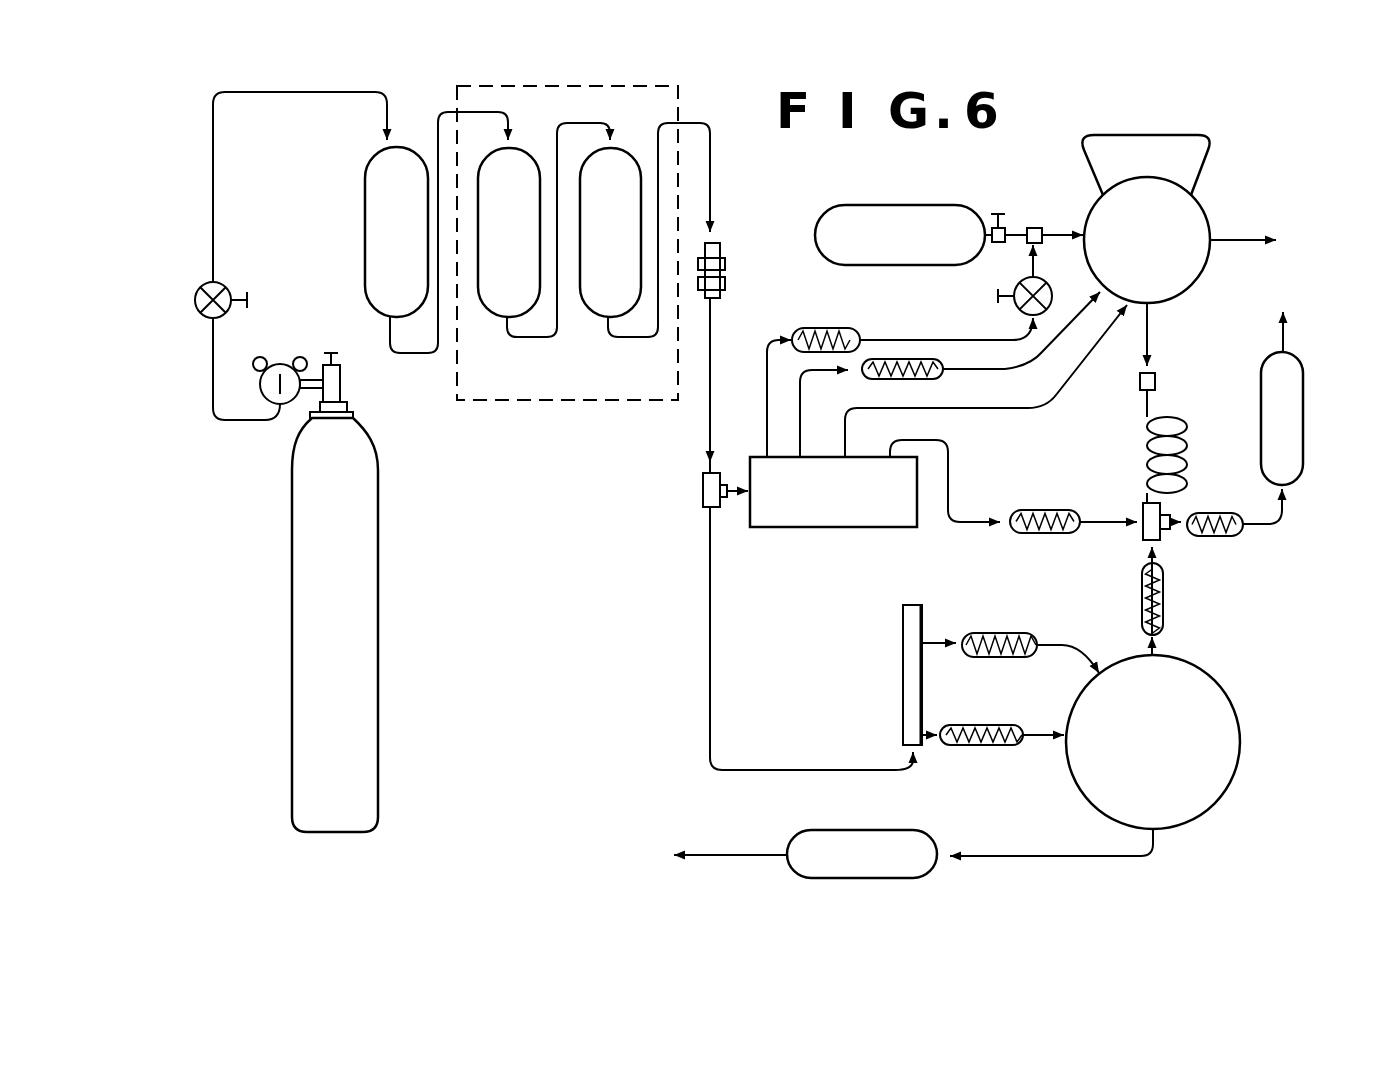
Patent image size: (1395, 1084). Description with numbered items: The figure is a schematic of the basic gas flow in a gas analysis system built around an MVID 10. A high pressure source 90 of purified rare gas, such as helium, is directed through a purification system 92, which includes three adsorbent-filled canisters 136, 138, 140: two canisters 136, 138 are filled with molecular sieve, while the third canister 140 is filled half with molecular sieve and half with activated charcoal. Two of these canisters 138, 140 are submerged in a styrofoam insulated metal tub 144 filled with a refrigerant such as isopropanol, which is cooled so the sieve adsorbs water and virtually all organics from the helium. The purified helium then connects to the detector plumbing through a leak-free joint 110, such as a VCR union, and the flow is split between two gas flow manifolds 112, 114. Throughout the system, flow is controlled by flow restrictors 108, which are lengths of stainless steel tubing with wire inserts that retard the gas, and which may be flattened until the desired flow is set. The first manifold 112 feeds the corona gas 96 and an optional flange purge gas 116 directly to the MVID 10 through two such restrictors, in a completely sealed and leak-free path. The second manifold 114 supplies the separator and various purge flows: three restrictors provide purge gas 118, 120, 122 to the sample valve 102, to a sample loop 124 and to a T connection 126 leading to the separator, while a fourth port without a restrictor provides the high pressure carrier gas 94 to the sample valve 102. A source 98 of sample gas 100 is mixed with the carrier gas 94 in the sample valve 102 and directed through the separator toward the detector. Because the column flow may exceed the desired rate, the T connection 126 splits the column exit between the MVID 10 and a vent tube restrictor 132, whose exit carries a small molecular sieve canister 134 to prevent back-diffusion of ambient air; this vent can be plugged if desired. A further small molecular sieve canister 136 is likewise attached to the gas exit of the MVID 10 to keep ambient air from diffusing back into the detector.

The MVID 10 is at (1250, 716).
The high pressure source of purified rare gas 90 is at (305, 688).
The purification system 92 is at (505, 72).
The carrier gas 94 is at (1097, 357).
The corona gas 96 is at (1073, 643).
The source of sample gas 98 is at (920, 232).
The sample gas 100 is at (1064, 232).
The sample valve 102 is at (1173, 167).
The flow restrictors 108 is at (827, 327).
The leak-free joint 110 is at (718, 252).
The gas flow manifold 112 is at (908, 623).
The second manifold 114 is at (817, 495).
The flange purge gas 116 is at (1030, 745).
The purge gas 118 is at (957, 340).
The purge gas 120 is at (1033, 363).
The purge gas 122 is at (950, 475).
The sample loop 124 is at (1153, 130).
The T connection 126 is at (1173, 503).
The vent tube restrictor 132 is at (1240, 537).
The molecular sieve canister 134 is at (1283, 385).
The molecular sieve canister 136 is at (393, 187).
The canister 138 is at (495, 205).
The canister 140 is at (597, 280).
The insulated metal tub 144 is at (495, 400).